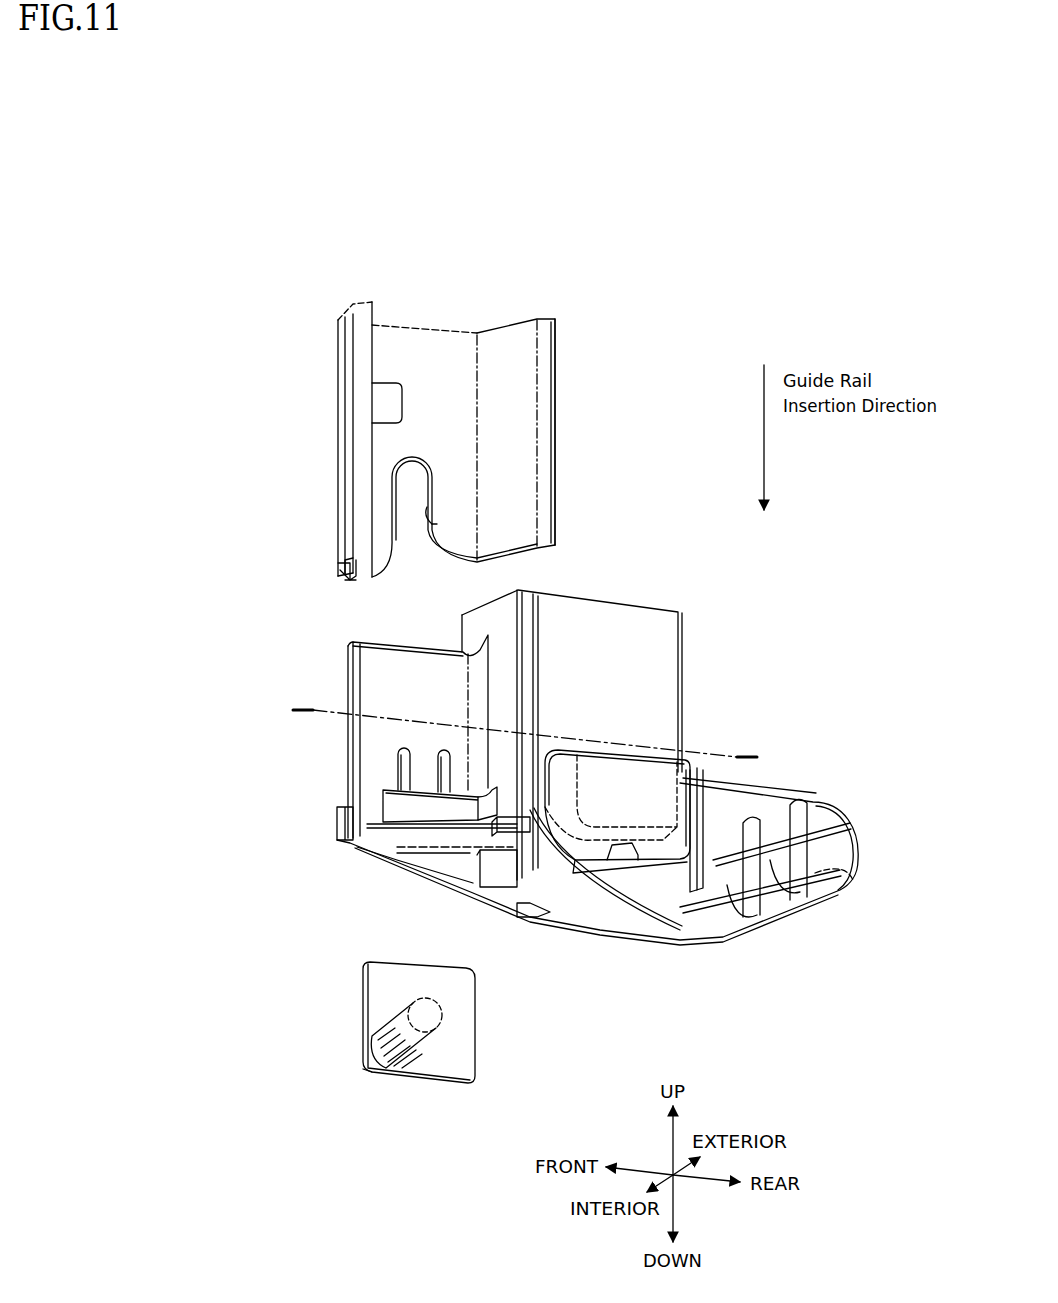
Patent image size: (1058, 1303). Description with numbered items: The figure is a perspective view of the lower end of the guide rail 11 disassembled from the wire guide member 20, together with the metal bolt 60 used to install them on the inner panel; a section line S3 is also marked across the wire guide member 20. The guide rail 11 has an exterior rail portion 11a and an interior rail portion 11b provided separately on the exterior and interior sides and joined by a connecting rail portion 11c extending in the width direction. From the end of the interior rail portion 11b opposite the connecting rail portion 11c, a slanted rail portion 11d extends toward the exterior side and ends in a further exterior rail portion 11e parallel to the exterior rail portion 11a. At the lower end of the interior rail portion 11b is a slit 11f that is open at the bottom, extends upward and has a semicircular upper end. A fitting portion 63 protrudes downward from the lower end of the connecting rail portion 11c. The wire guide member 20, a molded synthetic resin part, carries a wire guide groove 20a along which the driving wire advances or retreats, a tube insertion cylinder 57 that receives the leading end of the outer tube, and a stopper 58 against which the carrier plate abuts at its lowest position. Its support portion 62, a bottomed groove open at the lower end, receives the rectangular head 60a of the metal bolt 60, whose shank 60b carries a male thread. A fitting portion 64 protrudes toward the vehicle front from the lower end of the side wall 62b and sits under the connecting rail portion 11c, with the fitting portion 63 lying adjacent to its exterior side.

The guide rail 11 is at (443, 416).
The exterior rail portion 11a is at (358, 323).
The interior rail portion 11b is at (428, 352).
The connecting rail portion 11c is at (338, 566).
The slanted rail portion 11d is at (520, 402).
The exterior rail portion 11e is at (550, 420).
The slit 11f is at (432, 525).
The wire guide member 20 is at (518, 770).
The wire guide groove 20a is at (578, 895).
The tube insertion cylinder 57 is at (800, 808).
The stopper 58 is at (645, 775).
The metal bolt 60 is at (422, 1066).
The head 60a is at (437, 1062).
The shank 60b is at (385, 1070).
The support portion 62 is at (398, 672).
The side wall 62b is at (352, 780).
The fitting portion 63 is at (346, 583).
The fitting portion 64 is at (338, 823).
The section line S3 is at (302, 706).